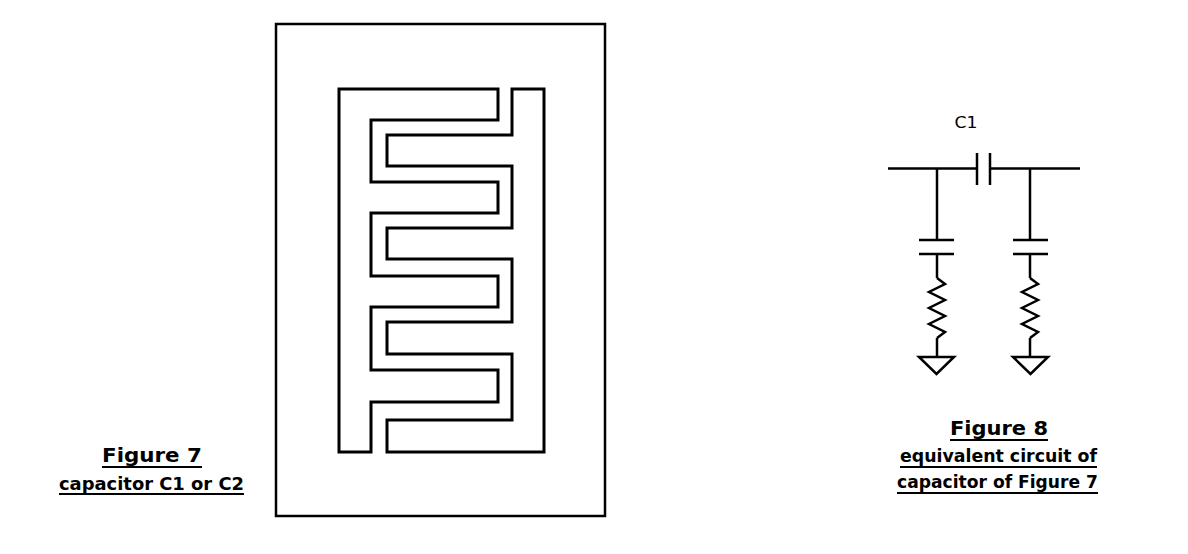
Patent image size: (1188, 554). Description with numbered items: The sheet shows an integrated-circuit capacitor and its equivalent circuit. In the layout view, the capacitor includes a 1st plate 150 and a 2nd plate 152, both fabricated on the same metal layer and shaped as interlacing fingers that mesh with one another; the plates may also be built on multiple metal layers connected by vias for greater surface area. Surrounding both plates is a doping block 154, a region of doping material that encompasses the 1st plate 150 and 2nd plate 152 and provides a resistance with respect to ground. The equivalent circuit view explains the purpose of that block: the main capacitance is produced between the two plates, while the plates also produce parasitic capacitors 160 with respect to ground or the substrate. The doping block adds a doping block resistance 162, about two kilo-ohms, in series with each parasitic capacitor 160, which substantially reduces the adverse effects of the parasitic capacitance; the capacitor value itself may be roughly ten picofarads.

In FIG. 7, the 1st plate 150 is at (338, 228).
In FIG. 7, the 2nd plate 152 is at (545, 104).
In FIG. 7, the doping block 154 is at (275, 324).
In FIG. 8, the parasitic capacitors 160 is at (1013, 228).
In FIG. 8, the doping block resistance 162 is at (1012, 310).